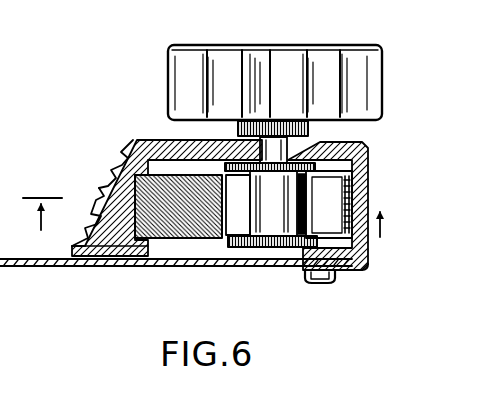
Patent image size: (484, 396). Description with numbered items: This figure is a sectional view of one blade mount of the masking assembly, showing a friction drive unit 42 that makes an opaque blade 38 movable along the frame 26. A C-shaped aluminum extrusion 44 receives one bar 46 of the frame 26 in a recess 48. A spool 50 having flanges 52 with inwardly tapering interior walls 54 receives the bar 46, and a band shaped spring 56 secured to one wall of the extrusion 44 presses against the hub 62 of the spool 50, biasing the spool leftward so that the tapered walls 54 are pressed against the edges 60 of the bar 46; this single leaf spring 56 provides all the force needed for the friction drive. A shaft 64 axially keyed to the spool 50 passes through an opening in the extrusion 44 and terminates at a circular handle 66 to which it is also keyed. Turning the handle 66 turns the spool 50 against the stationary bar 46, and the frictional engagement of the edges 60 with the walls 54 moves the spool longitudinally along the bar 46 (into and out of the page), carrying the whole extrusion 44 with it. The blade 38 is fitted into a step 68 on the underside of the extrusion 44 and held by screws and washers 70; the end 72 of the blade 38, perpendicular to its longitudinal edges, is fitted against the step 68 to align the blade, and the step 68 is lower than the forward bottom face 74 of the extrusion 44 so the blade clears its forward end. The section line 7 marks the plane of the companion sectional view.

The section line 7- 7 is at (205, 231).
The frame 26 is at (169, 246).
The opaque blade 38 is at (258, 262).
The friction drive unit 42 is at (147, 63).
The C-shaped aluminum extrusion 44 is at (358, 165).
The bar 46 is at (130, 217).
The recess 48 is at (135, 183).
The spool 50 is at (282, 252).
The flanges 52 is at (222, 141).
The inwardly tapering interior walls 54 is at (238, 205).
The band shaped spring 56 is at (357, 196).
The edges 60 is at (185, 275).
The hub 62 is at (307, 193).
The shaft 64 is at (300, 146).
The circular handle 66 is at (295, 47).
The step 68 is at (331, 282).
The screws and washers 70 is at (311, 282).
The end of the blade 72 is at (342, 270).
The forward bottom face 74 is at (110, 264).